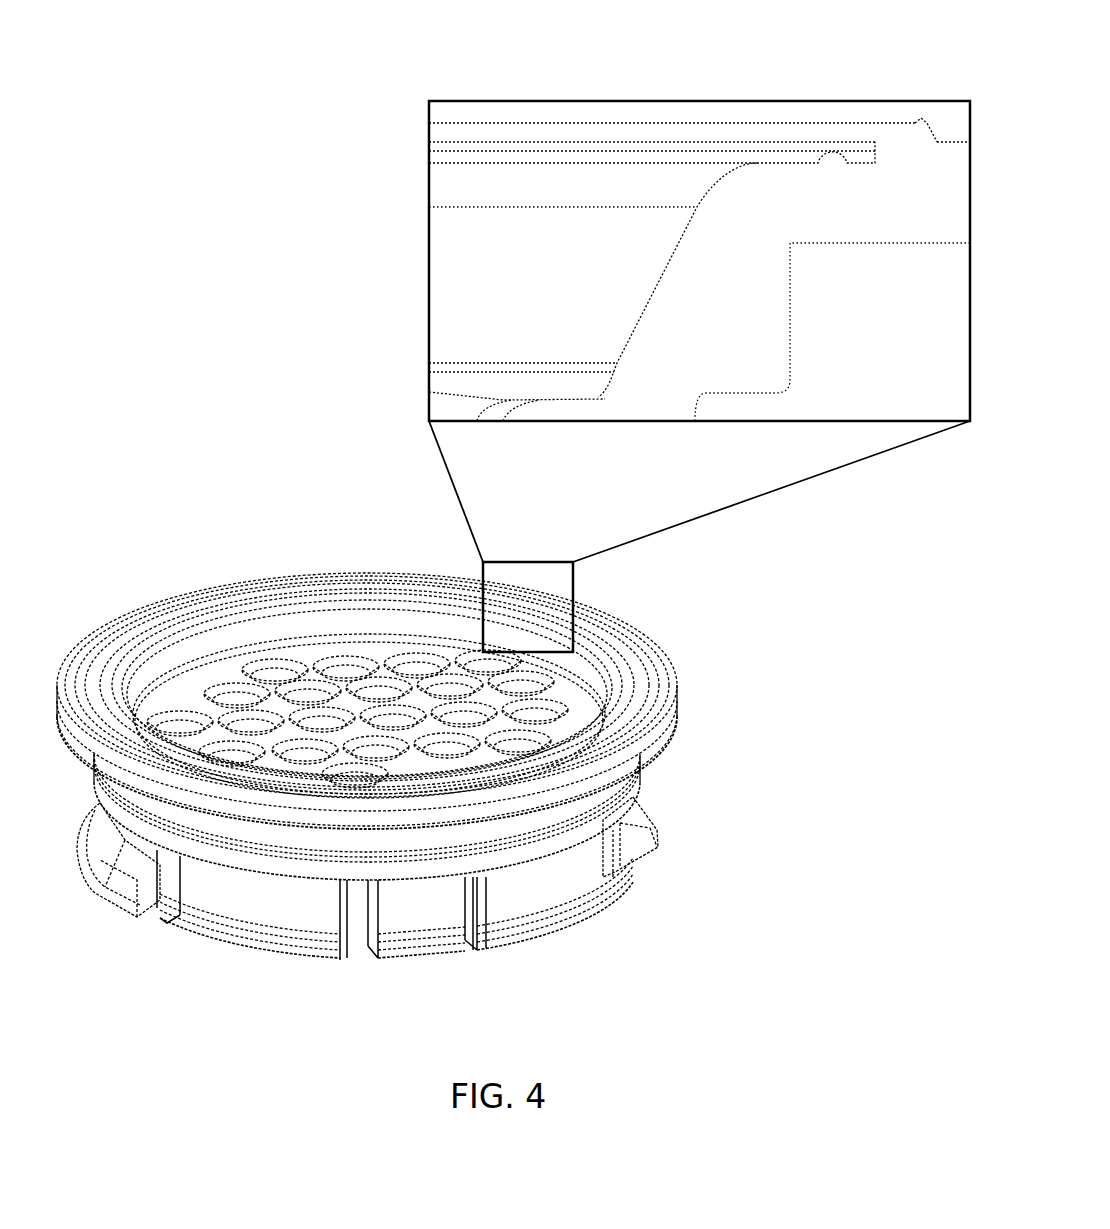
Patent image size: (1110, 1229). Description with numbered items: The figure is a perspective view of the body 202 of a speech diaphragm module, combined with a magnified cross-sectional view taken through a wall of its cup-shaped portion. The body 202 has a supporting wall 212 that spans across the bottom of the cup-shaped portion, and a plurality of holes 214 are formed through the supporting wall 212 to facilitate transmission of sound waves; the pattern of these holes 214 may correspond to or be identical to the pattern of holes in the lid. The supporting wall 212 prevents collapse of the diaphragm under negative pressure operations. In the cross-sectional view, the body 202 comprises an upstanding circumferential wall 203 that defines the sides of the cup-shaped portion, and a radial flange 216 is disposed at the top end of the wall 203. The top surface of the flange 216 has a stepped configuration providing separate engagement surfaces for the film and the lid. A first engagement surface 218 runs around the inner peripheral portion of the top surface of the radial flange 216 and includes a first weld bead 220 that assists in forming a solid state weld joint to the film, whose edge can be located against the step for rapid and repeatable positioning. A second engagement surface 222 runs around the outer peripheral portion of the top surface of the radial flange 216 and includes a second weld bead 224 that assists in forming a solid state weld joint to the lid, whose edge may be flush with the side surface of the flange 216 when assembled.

The body 202 is at (633, 795).
The upstanding circumferential wall 203 is at (723, 330).
The supporting wall 212 is at (360, 639).
The plurality of holes 214 is at (425, 690).
The radial flange 216 is at (860, 222).
The first engagement surface 218 is at (787, 162).
The first weld bead 220 is at (830, 153).
The second engagement surface 222 is at (947, 140).
The second weld bead 224 is at (920, 135).